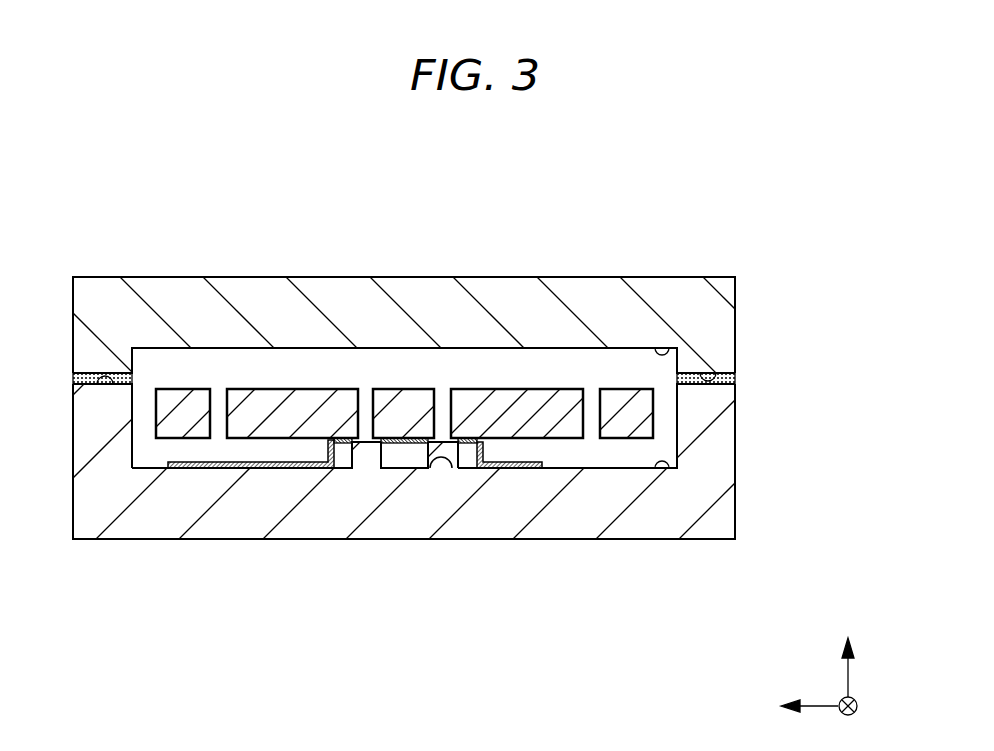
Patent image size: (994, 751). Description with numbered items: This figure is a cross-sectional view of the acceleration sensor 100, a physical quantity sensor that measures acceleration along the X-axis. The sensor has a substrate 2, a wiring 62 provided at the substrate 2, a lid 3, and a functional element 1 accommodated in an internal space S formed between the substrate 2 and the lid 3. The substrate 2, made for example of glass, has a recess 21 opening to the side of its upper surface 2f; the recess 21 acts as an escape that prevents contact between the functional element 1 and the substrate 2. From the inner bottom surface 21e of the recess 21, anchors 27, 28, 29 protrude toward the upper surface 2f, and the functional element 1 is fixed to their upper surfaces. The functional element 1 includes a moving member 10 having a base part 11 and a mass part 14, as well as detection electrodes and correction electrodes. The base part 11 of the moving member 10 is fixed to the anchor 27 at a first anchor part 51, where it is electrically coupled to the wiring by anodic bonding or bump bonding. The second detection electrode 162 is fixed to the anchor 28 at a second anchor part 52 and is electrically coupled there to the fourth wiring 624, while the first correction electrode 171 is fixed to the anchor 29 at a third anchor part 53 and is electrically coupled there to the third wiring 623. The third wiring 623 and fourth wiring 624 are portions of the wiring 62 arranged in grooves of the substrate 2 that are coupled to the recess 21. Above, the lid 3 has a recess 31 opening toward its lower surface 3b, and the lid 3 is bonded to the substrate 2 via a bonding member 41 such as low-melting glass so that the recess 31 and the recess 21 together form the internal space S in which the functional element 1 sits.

The acceleration sensor 100 is at (780, 222).
The functional element 1 is at (309, 376).
The lid 3 is at (735, 295).
The lower surface 3b is at (718, 372).
The recess 31 is at (661, 347).
The bonding member 41 is at (735, 376).
The substrate 2 is at (735, 487).
The upper surface 2f is at (115, 387).
The recess 21 is at (670, 468).
The inner bottom surface 21e is at (452, 469).
The anchor 27 is at (398, 455).
The anchor 28 is at (468, 455).
The anchor 29 is at (351, 455).
The wiring 62 is at (361, 560).
The third wiring 623 is at (183, 469).
The fourth wiring 624 is at (530, 470).
The moving member 10 is at (157, 389).
The mass part 14 is at (193, 392).
The first correction electrode 171 is at (273, 393).
The base part 11 is at (383, 392).
The second detection electrode 162 is at (537, 392).
The third anchor part 53 is at (344, 438).
The first anchor part 51 is at (418, 438).
The second anchor part 52 is at (468, 438).
The internal space S is at (574, 346).